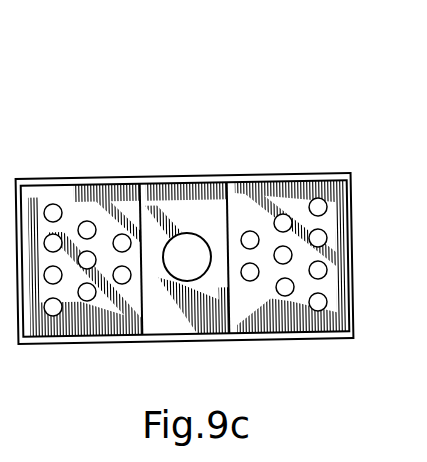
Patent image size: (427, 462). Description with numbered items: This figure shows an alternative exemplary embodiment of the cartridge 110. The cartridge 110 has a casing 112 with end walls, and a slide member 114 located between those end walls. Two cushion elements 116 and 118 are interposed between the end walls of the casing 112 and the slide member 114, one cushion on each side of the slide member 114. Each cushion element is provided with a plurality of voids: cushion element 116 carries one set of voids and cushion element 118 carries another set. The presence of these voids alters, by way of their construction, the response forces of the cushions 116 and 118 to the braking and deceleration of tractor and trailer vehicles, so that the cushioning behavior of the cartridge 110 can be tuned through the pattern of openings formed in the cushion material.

The cartridge 110 is at (218, 202).
The casing 112 is at (293, 338).
The slide member 114 is at (182, 186).
The cushion element 116 is at (206, 240).
The cushion element 118 is at (184, 219).